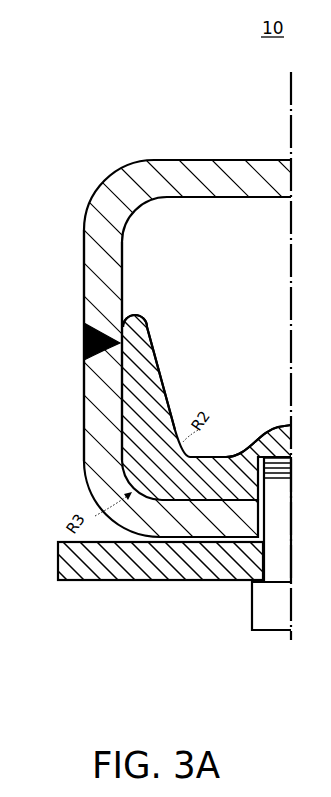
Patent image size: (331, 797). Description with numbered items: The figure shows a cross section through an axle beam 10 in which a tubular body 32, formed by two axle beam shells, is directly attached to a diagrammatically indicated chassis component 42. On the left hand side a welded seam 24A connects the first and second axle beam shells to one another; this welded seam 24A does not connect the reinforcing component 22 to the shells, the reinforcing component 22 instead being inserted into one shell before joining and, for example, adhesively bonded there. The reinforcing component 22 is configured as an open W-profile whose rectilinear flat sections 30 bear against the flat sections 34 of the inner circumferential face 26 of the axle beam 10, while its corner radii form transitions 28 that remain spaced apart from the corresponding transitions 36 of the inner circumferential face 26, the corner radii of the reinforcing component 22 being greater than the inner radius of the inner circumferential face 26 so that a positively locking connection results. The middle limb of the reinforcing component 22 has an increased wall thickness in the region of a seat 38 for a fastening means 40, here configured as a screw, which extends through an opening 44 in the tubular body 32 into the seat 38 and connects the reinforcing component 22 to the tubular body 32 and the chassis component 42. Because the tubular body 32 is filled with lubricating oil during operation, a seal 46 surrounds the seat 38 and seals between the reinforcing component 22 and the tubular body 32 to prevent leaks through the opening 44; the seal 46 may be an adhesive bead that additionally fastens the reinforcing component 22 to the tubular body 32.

The axle beam 10 is at (273, 28).
The reinforcing component 22 is at (182, 412).
The welded seam 24A is at (82, 330).
The inner circumferential face 26 is at (244, 203).
The transitions 28 is at (250, 441).
The flat sections 30 is at (162, 366).
The tubular body 32 is at (159, 147).
The flat sections 34 is at (125, 290).
The transitions 36 is at (125, 196).
The seat 38 is at (273, 424).
The fastening means 40 is at (250, 612).
The chassis component 42 is at (105, 583).
The opening 44 is at (243, 585).
The seal 46 is at (182, 583).